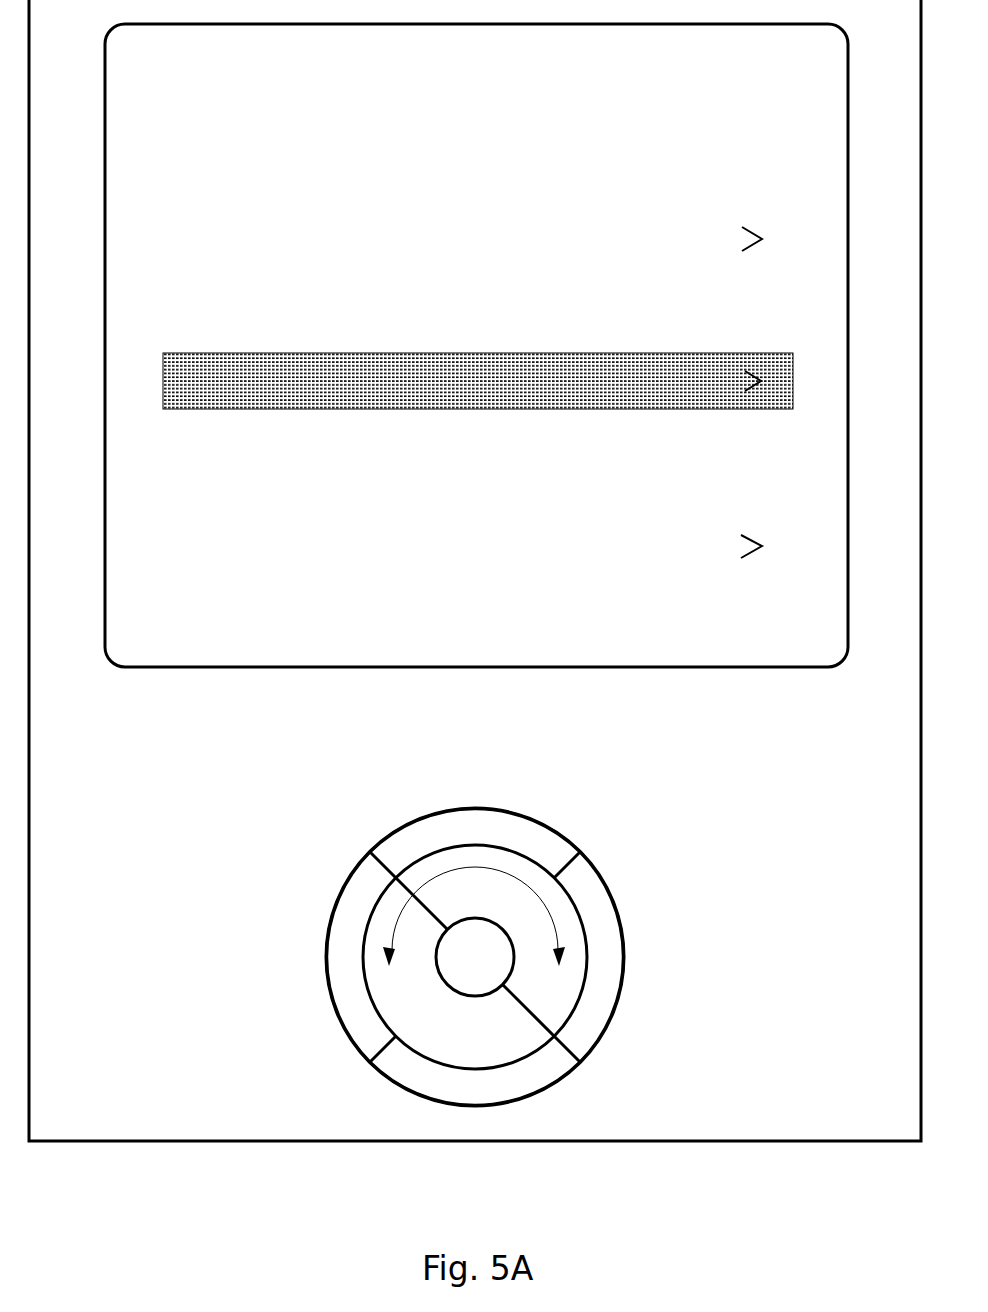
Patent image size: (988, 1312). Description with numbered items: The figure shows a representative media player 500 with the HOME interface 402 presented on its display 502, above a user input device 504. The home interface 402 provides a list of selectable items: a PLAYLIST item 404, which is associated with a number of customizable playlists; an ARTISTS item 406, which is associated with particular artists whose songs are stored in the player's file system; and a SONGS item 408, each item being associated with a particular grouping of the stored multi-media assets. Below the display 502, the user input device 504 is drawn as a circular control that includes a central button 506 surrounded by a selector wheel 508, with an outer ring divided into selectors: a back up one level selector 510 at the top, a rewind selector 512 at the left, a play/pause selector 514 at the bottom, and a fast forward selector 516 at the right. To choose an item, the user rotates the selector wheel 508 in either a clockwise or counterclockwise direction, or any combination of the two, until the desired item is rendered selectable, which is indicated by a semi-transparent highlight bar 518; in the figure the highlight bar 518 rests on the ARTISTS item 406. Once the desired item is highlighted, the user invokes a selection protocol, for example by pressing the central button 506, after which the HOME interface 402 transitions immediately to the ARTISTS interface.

The home interface 402 is at (478, 84).
The PLAYLIST item 404 is at (482, 256).
The ARTISTS item 406 is at (235, 409).
The SONGS item 408 is at (482, 565).
The media player 500 is at (475, 570).
The display 502 is at (740, 668).
The user input device 504 is at (630, 856).
The central button 506 is at (475, 957).
The selector wheel 508 is at (475, 957).
The back up one level selector 510 is at (475, 843).
The rewind selector 512 is at (344, 888).
The play/pause selector 514 is at (475, 1083).
The fast forward selector 516 is at (614, 906).
The semi-transparent highlight bar 518 is at (510, 406).